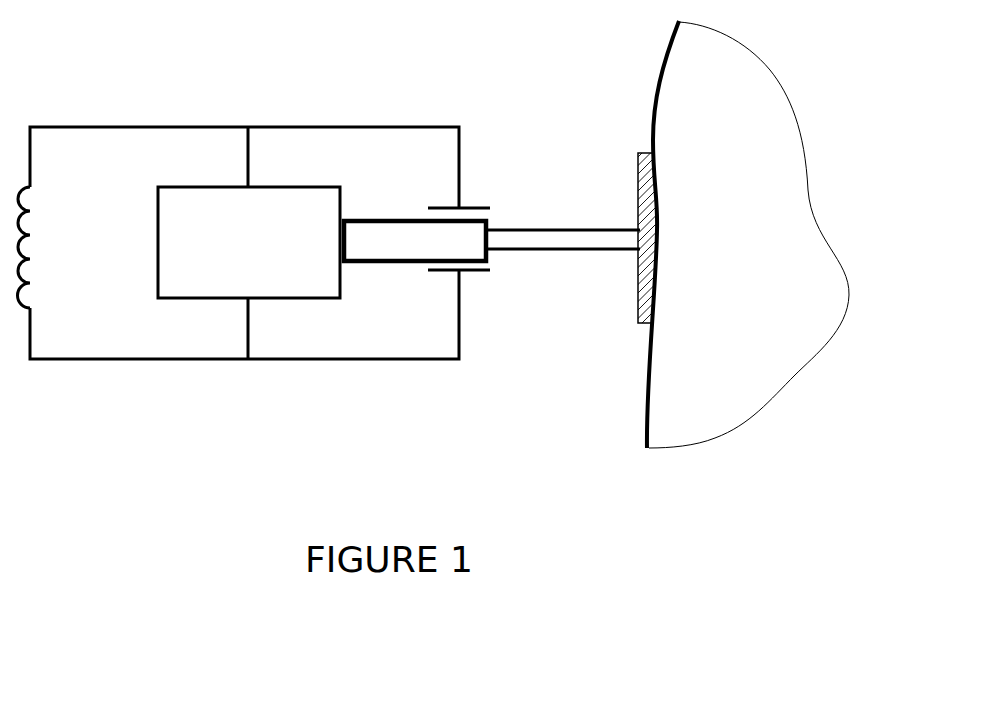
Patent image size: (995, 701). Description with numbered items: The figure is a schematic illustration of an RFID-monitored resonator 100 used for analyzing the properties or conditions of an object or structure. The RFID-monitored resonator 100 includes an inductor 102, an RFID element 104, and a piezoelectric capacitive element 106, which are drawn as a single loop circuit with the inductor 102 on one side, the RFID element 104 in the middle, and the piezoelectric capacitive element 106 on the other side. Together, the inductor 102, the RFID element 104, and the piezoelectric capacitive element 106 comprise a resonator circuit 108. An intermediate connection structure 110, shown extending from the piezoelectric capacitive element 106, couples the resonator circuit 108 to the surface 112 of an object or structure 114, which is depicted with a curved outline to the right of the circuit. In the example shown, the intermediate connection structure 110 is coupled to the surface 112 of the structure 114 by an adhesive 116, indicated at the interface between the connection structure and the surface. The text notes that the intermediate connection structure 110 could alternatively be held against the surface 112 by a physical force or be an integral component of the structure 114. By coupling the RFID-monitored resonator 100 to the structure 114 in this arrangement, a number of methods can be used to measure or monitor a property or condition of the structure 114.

The RFID-monitored resonator 100 is at (273, 80).
The inductor 102 is at (43, 247).
The RFID element 104 is at (265, 253).
The piezoelectric capacitive element 106 is at (417, 239).
The resonator circuit 108 is at (244, 390).
The intermediate connection structure 110 is at (581, 272).
The surface 112 is at (640, 104).
The structure 114 is at (746, 285).
The adhesive 116 is at (658, 203).